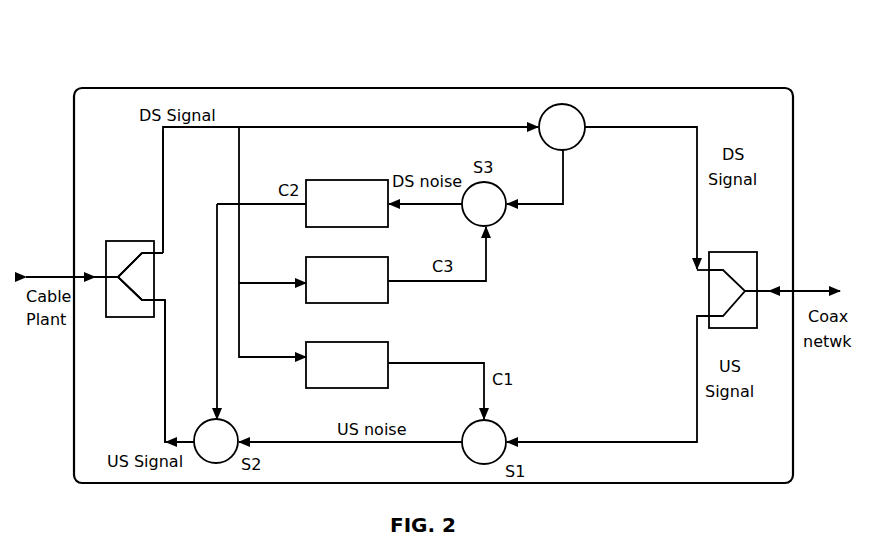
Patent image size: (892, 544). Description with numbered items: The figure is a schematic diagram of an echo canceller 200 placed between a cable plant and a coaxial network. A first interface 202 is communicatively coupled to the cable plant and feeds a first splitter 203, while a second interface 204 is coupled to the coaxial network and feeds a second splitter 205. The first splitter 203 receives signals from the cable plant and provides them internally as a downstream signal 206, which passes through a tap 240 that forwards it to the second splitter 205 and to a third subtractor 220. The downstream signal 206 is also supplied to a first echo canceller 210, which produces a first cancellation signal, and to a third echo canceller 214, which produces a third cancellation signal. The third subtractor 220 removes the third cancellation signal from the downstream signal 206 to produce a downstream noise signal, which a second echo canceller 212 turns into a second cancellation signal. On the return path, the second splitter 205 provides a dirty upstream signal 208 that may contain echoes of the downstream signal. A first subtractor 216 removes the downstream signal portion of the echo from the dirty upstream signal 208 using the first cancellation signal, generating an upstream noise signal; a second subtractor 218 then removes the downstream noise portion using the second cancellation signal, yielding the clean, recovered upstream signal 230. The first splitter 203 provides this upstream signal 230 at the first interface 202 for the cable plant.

The echo canceller 200 is at (185, 86).
The first interface 202 is at (56, 276).
The first splitter 203 is at (154, 270).
The second interface 204 is at (812, 291).
The second splitter 205 is at (709, 287).
The downstream signal 206 is at (163, 185).
The dirty upstream signal 208 is at (697, 430).
The first echo canceller 210 is at (337, 342).
The second echo canceller 212 is at (333, 180).
The third echo canceller 214 is at (341, 257).
The first subtractor 216 is at (502, 430).
The second subtractor 218 is at (236, 428).
The third subtractor 220 is at (500, 190).
The upstream signal 230 is at (165, 423).
The tap 240 is at (578, 142).